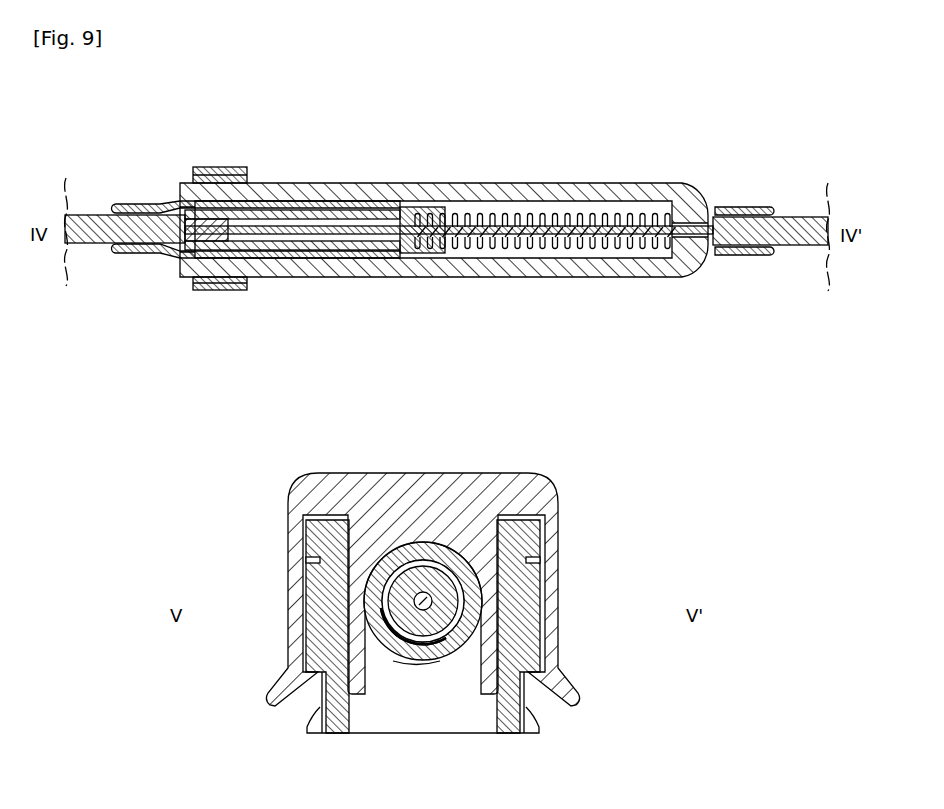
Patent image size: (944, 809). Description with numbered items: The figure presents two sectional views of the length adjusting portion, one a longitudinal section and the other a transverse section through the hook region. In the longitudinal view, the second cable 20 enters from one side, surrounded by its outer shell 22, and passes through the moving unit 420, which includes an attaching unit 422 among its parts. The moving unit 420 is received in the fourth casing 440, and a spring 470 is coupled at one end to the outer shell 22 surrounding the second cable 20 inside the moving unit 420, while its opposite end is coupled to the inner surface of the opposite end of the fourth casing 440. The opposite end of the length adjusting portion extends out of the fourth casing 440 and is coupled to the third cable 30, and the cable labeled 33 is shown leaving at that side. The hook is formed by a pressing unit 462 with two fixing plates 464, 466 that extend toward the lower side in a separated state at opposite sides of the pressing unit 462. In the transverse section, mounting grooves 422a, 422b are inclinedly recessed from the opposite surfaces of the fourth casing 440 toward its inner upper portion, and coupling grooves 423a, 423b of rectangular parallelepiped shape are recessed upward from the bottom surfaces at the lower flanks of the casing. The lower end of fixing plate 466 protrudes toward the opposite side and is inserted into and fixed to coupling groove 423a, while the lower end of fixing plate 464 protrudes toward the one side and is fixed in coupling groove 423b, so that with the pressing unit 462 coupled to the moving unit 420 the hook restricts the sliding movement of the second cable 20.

The second cable 20 is at (293, 228).
The outer shell 22 is at (95, 215).
The third cable 30 is at (712, 215).
The second cable 33 is at (792, 217).
The moving unit 420 is at (397, 400).
The attaching unit 422 is at (367, 213).
The mounting groove 422a is at (533, 562).
The mounting groove 422b is at (320, 560).
The coupling groove 423a is at (528, 713).
The coupling groove 423b is at (315, 712).
The fourth casing 440 is at (613, 196).
The pressing unit 462 is at (207, 283).
The fixing plate 464 is at (217, 167).
The fixing plate 466 is at (241, 290).
The spring 470 is at (467, 215).